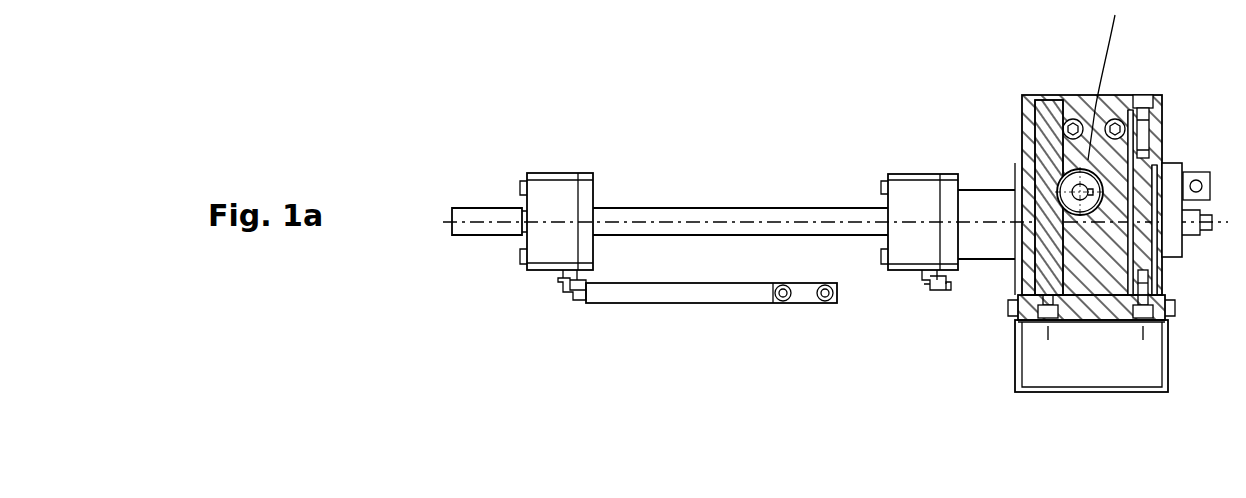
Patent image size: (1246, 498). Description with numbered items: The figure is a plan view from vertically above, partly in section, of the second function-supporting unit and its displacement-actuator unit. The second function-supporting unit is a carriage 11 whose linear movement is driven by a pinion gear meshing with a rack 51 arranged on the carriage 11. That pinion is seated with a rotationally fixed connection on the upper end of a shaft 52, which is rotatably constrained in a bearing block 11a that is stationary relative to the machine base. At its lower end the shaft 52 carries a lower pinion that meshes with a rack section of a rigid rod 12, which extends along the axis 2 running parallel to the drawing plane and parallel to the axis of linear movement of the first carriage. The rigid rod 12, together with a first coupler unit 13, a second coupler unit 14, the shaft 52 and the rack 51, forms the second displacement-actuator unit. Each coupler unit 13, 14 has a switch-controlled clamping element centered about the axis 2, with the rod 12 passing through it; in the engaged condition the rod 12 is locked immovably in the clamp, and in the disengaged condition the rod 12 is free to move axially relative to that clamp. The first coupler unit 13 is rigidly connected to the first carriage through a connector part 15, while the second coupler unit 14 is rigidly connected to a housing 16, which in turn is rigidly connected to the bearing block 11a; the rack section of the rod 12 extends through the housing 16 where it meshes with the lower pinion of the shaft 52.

The axis 2 is at (497, 222).
The carriage 11 is at (1093, 315).
The bearing block 11a is at (1115, 100).
The rigid rod 12 is at (713, 208).
The first coupler unit 13 is at (540, 200).
The second coupler unit 14 is at (908, 207).
The connector part 15 is at (698, 292).
The housing 16 is at (985, 210).
The rack 51 is at (1045, 108).
The shaft 52 is at (1080, 180).